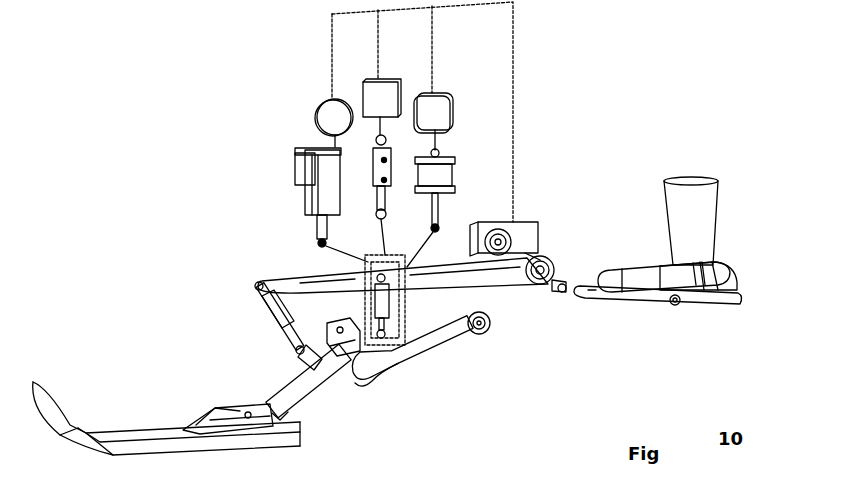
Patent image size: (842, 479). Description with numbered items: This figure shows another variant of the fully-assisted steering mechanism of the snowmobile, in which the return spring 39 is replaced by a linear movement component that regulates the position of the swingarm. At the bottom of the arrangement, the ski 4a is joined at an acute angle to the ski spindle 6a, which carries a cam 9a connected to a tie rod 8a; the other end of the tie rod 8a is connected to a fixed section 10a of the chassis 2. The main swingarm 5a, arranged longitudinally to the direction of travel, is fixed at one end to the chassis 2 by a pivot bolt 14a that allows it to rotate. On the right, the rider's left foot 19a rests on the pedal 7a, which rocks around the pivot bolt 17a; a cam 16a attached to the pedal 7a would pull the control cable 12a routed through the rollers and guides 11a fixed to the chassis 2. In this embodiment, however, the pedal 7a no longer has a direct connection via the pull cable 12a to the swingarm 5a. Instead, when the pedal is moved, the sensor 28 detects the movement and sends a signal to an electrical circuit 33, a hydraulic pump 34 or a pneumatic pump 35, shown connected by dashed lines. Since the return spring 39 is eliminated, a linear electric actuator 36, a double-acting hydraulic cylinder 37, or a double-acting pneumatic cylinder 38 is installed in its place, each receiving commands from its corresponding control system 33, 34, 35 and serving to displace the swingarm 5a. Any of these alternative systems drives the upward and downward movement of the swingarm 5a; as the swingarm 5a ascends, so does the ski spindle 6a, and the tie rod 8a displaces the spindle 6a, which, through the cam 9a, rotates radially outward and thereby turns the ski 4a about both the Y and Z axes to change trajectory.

The chassis 2 is at (297, 278).
The ski 4a is at (150, 430).
The main swingarm 5a is at (410, 356).
The ski spindle 6a is at (283, 392).
The pedal 7a is at (735, 290).
The tie rod 8a is at (280, 322).
The cam 9a is at (306, 367).
The fixed section 10a is at (256, 285).
The rollers and guides 11a is at (531, 281).
The control cable 12a is at (561, 281).
The pivot bolt 14a is at (492, 331).
The cam 16a is at (565, 292).
The pivot bolt 17a is at (682, 303).
The left foot 19a is at (673, 276).
The sensor 28 is at (535, 222).
The electrical circuit 33 is at (334, 123).
The hydraulic pump 34 is at (382, 107).
The pneumatic pump 35 is at (433, 121).
The linear electric actuator 36 is at (296, 170).
The double-acting hydraulic cylinder 37 is at (391, 195).
The double-acting pneumatic cylinder 38 is at (447, 170).
The return spring 39 is at (403, 306).